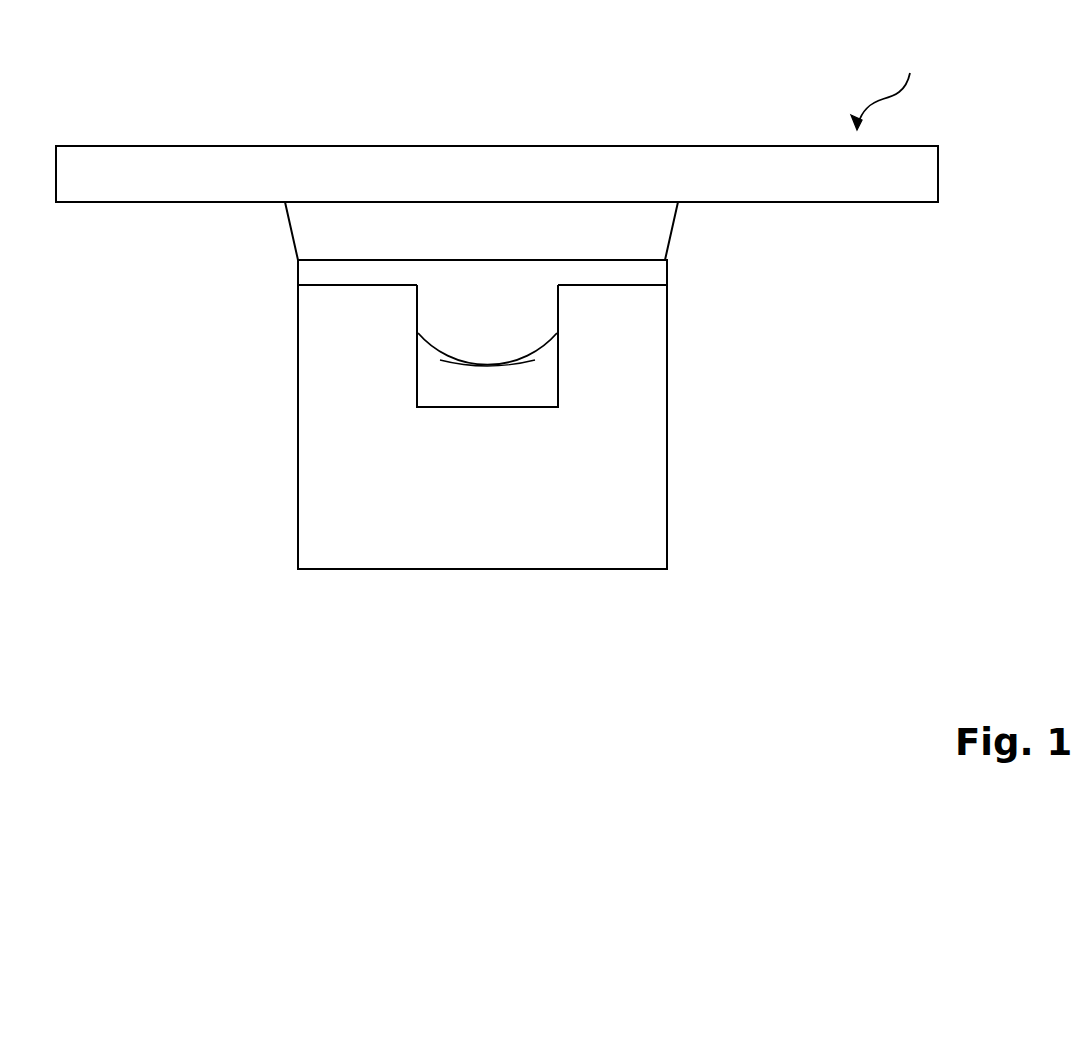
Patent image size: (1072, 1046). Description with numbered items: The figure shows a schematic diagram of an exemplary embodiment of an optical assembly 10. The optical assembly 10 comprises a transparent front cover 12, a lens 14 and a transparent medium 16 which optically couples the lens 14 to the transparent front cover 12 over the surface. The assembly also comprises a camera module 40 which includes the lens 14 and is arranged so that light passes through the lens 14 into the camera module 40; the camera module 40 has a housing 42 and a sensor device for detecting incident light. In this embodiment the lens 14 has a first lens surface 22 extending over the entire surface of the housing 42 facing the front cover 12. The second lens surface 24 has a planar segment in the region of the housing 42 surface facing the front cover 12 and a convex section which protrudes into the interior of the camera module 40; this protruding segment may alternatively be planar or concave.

The optical assembly 10 is at (892, 85).
The transparent front cover 12 is at (898, 179).
The lens 14 is at (535, 332).
The transparent medium 16 is at (615, 250).
The first lens surface 22 is at (440, 262).
The second lens surface 24 is at (490, 366).
The camera module 40 is at (597, 460).
The housing 42 is at (667, 377).